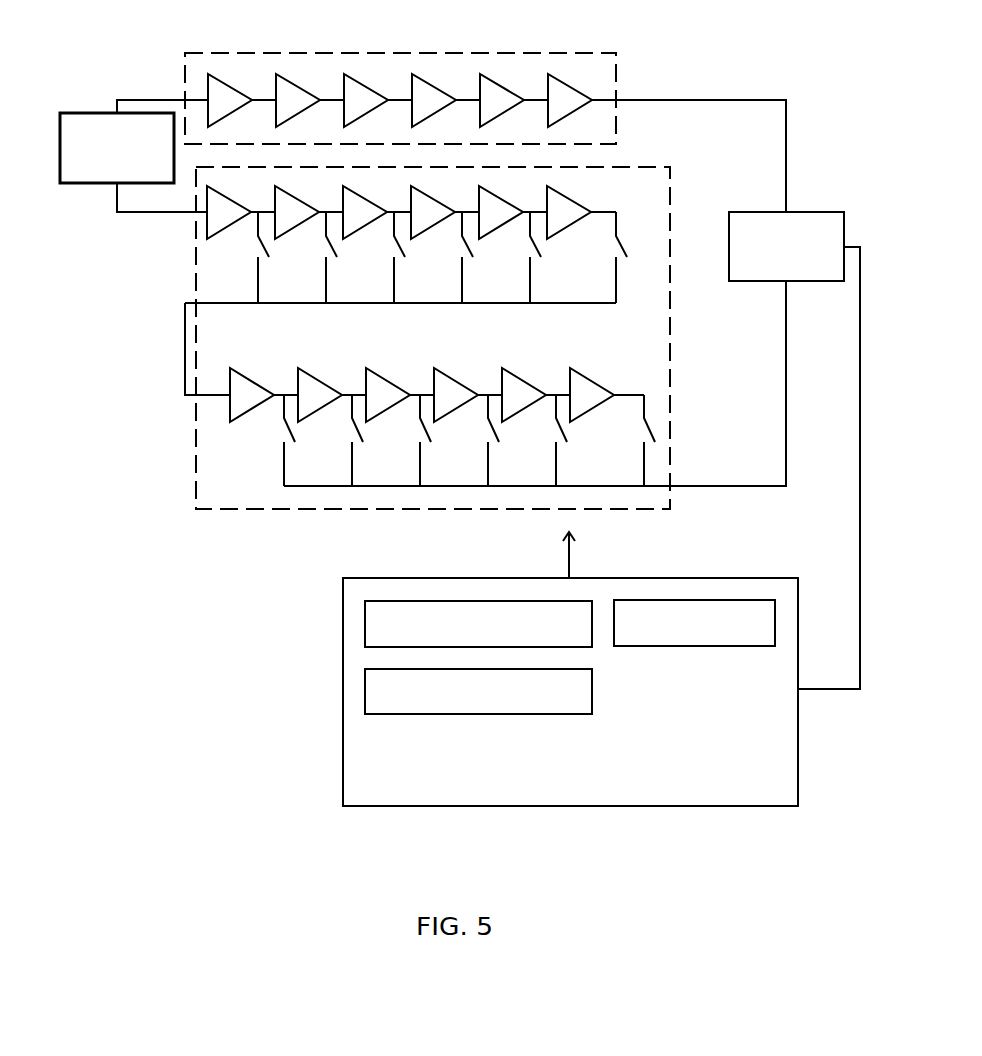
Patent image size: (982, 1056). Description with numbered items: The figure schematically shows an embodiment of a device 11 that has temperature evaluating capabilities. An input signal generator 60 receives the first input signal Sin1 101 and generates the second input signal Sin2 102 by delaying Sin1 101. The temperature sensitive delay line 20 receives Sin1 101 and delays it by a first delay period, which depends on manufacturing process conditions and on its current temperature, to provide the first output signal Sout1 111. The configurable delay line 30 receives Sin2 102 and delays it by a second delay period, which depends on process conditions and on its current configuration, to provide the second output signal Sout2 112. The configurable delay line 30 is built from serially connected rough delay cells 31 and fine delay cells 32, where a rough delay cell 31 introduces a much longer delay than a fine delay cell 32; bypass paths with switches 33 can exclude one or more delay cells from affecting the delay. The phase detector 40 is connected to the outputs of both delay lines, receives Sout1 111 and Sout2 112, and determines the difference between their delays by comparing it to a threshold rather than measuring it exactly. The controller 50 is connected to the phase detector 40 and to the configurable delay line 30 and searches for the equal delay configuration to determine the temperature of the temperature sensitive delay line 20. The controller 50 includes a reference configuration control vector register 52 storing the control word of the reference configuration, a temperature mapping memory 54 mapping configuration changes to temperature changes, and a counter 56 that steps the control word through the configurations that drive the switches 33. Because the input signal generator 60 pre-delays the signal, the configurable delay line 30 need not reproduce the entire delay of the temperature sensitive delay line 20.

The device 11 is at (288, 875).
The temperature sensitive delay line 20 is at (400, 52).
The configurable delay line 30 is at (672, 337).
The rough delay cell 31 is at (300, 197).
The fine delay cell 32 is at (251, 373).
The switch 33 is at (271, 256).
The phase detector 40 is at (794, 450).
The controller 50 is at (570, 669).
The reference configuration control vector register 52 is at (478, 624).
The temperature mapping memory 54 is at (478, 691).
The counter 56 is at (694, 623).
The input signal generator 60 is at (117, 148).
The first input signal Sin1 101 is at (162, 95).
The second input signal Sin2 102 is at (162, 197).
The first output signal Sout1 111 is at (689, 146).
The second output signal Sout2 112 is at (535, 383).